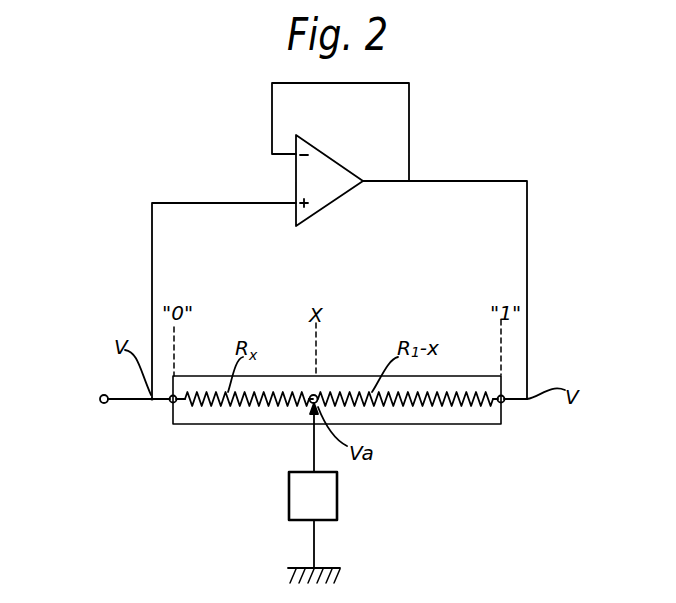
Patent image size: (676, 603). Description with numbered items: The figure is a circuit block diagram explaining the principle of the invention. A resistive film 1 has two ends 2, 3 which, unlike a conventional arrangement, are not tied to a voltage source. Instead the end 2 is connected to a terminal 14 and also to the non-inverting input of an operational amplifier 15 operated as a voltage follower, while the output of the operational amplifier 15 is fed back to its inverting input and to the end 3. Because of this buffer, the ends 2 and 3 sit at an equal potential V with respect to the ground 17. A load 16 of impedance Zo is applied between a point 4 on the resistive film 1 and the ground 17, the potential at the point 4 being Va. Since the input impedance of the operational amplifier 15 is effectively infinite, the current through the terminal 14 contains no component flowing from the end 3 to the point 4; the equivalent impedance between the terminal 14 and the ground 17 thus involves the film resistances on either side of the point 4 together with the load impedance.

The resistive film 1 is at (264, 425).
The end 2 is at (168, 404).
The end 3 is at (505, 402).
The point 4 is at (320, 396).
The terminal 14 is at (100, 397).
The operational amplifier 15 is at (333, 202).
The load 16 is at (338, 497).
The ground 17 is at (336, 571).